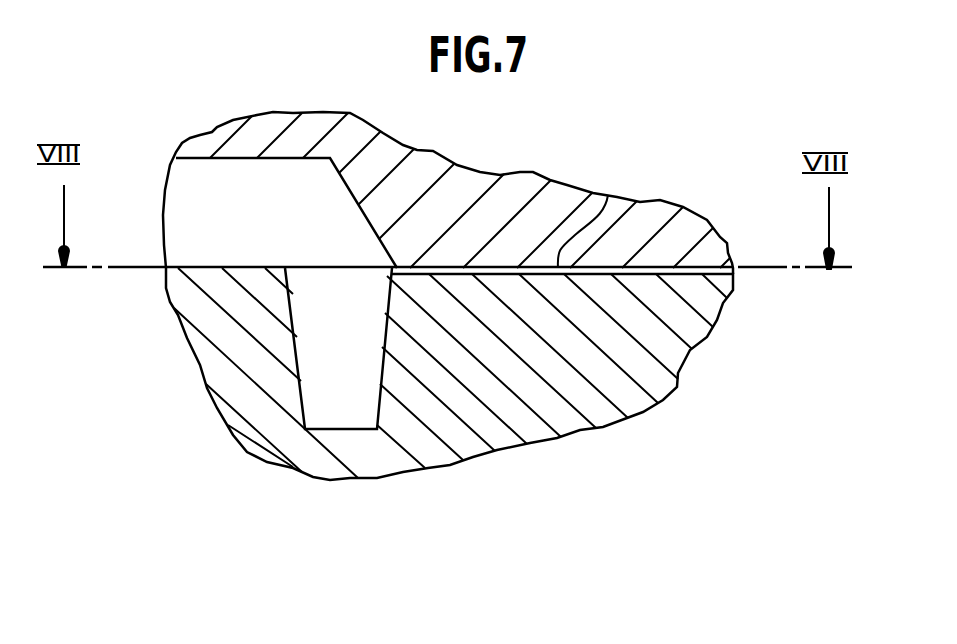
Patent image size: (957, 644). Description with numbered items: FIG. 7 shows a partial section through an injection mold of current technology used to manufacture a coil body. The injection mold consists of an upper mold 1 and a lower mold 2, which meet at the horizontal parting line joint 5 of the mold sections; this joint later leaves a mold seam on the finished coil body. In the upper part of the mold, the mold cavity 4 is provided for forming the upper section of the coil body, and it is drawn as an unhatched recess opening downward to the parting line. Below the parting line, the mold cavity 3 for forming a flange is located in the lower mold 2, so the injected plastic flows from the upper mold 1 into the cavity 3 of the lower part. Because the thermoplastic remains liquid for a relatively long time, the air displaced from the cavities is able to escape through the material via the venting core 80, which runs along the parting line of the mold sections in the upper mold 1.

The upper mold 1 is at (420, 166).
The lower mold 2 is at (561, 425).
The mold cavities 3 is at (369, 341).
The mold cavity 4 is at (255, 224).
The parting line joint 5 is at (131, 267).
The venting core 80 is at (608, 195).